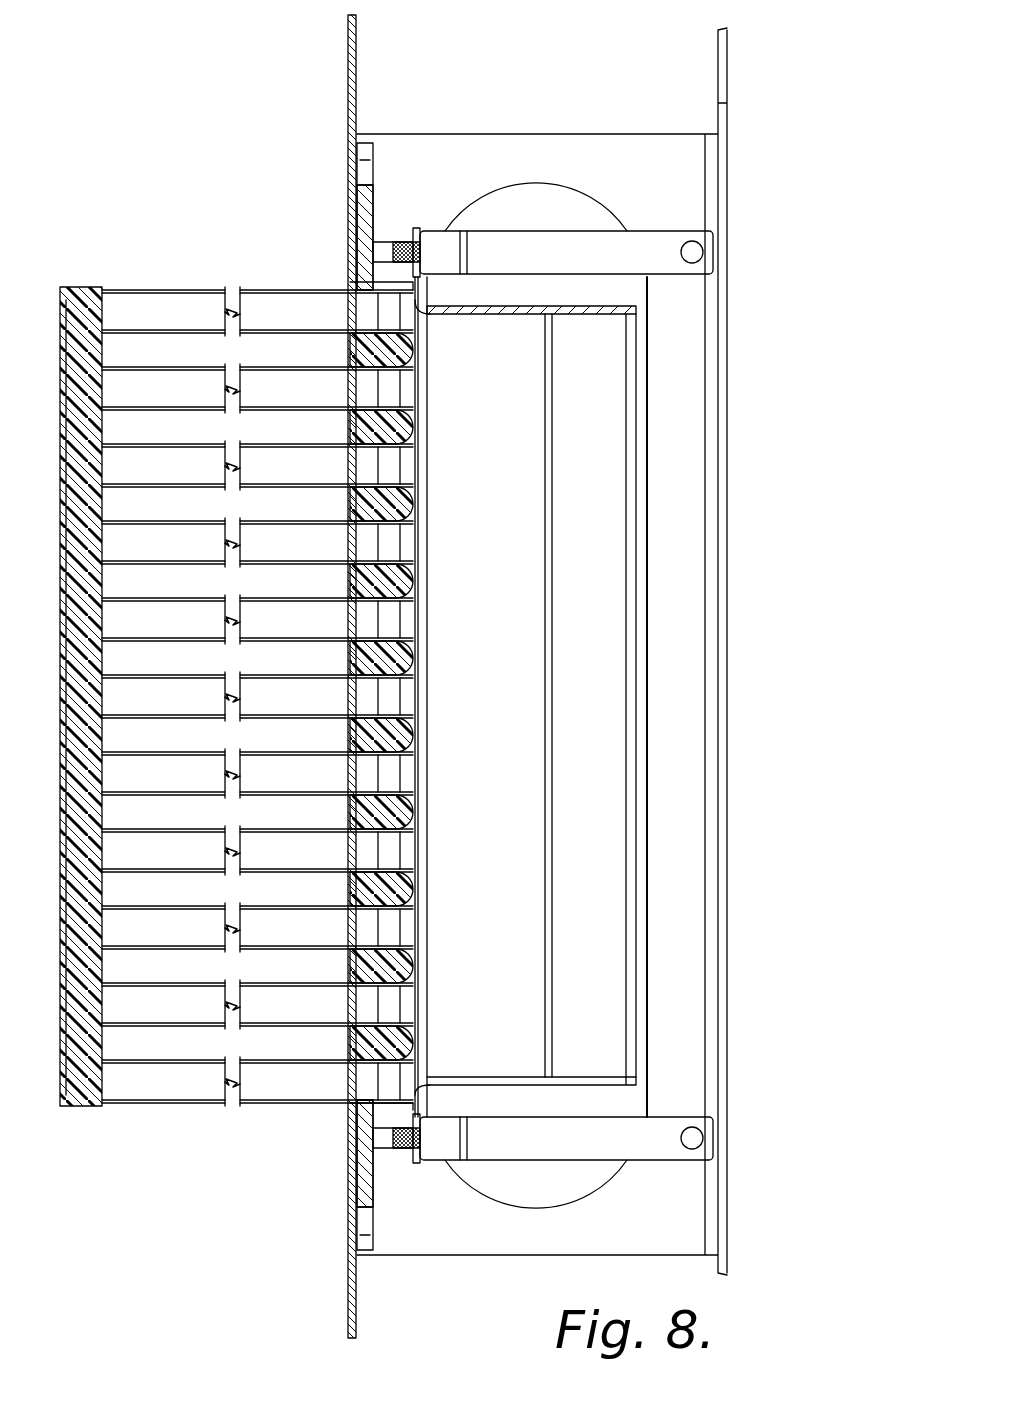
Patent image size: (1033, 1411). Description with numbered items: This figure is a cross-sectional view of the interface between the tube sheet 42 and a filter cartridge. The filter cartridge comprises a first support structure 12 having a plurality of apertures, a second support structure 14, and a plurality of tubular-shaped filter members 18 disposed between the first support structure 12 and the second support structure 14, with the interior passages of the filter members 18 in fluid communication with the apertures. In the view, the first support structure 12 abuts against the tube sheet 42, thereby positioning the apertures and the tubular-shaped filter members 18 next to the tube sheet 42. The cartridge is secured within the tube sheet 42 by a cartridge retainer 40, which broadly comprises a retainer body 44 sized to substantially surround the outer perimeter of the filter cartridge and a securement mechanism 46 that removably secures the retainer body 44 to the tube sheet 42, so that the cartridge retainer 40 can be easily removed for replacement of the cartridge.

The first support structure 12 is at (350, 1103).
The second support structure 14 is at (78, 288).
The tubular-shaped filter members 18 is at (312, 289).
The cartridge retainer 40 is at (640, 663).
The tube sheet 42 is at (353, 90).
The retainer body 44 is at (625, 1083).
The securement mechanism 46 is at (700, 262).